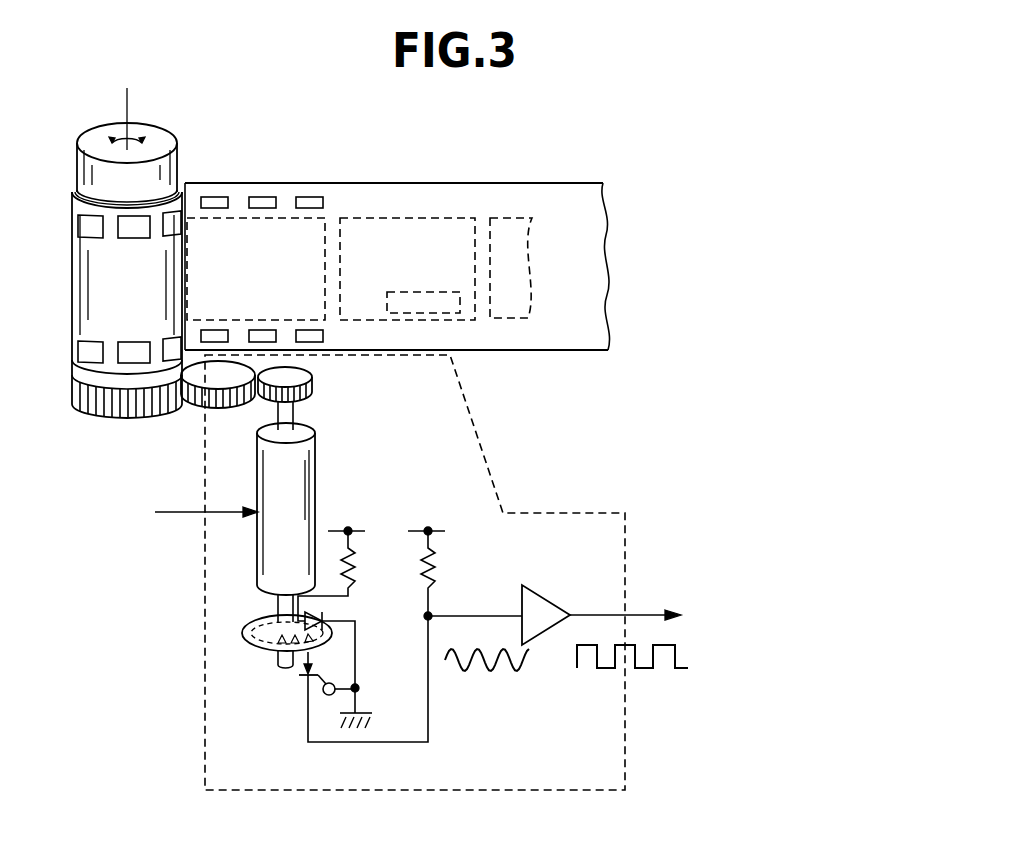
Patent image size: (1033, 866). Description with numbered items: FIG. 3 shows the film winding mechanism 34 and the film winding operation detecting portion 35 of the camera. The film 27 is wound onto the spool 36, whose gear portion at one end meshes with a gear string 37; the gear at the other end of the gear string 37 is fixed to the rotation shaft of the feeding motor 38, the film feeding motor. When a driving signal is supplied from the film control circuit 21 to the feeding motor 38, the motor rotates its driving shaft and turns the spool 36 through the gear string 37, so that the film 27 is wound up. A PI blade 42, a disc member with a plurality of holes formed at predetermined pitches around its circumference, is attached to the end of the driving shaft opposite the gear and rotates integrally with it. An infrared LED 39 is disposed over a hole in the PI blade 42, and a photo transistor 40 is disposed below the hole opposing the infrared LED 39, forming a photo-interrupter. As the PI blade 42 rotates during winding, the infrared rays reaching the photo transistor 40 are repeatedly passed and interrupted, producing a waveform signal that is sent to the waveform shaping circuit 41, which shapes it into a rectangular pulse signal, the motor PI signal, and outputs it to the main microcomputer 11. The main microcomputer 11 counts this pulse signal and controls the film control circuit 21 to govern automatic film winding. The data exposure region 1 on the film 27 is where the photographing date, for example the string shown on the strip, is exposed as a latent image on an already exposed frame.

The spool 36 is at (178, 140).
The film 27 is at (372, 183).
The data exposure region 1 is at (425, 293).
The gear string 37 is at (240, 372).
The film winding mechanism 34 is at (415, 572).
The film winding operation detecting portion 35 is at (487, 450).
The feeding motor 38 is at (317, 480).
The PI blade 42 is at (242, 633).
The infrared LED 39 is at (330, 615).
The photo transistor 40 is at (300, 680).
The waveform shaping circuit 41 is at (545, 593).
The film control circuit 21 is at (141, 524).
The main microcomputer 11 is at (730, 614).